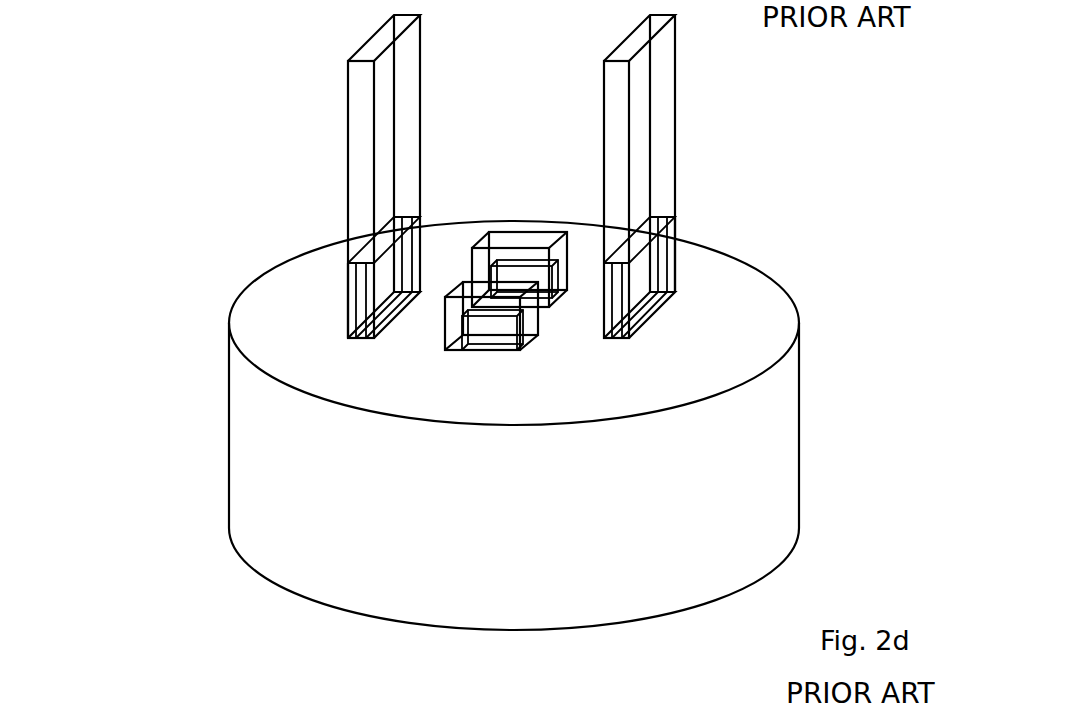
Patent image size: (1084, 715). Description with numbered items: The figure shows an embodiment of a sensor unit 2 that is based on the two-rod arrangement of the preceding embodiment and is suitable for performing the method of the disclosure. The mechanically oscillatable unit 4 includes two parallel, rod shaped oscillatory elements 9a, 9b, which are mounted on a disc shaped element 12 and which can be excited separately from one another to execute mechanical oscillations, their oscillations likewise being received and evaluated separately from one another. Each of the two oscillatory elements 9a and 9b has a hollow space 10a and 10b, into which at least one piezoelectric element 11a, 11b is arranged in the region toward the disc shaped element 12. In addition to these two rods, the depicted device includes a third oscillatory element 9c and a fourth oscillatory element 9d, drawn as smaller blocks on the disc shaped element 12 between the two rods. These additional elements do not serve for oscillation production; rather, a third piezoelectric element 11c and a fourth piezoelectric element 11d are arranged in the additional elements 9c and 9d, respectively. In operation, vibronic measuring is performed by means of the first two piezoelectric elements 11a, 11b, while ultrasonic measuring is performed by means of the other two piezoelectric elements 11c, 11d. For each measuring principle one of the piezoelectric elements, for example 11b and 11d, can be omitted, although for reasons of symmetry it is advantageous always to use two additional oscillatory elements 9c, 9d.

The sensor unit 2 is at (62, 140).
The mechanically oscillatable unit 4 is at (228, 155).
The first oscillatory element 9a is at (333, 115).
The second oscillatory element 9b is at (742, 94).
The third oscillatory element 9c is at (443, 344).
The fourth oscillatory element 9d is at (536, 230).
The hollow space 10a is at (343, 302).
The hollow space 10b is at (675, 283).
The first piezoelectric element 11a is at (366, 260).
The second piezoelectric element 11b is at (656, 238).
The third piezoelectric element 11c is at (486, 333).
The fourth piezoelectric element 11d is at (494, 279).
The disc shaped element 12 is at (253, 519).